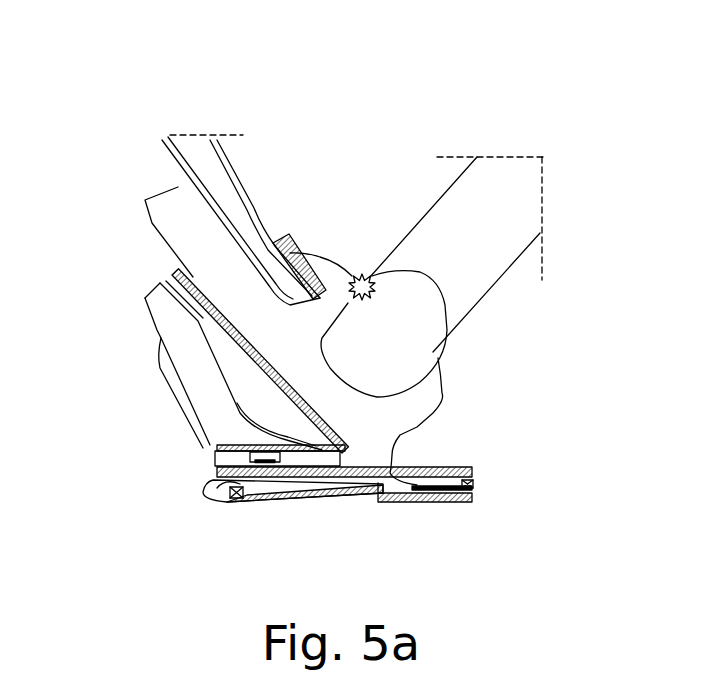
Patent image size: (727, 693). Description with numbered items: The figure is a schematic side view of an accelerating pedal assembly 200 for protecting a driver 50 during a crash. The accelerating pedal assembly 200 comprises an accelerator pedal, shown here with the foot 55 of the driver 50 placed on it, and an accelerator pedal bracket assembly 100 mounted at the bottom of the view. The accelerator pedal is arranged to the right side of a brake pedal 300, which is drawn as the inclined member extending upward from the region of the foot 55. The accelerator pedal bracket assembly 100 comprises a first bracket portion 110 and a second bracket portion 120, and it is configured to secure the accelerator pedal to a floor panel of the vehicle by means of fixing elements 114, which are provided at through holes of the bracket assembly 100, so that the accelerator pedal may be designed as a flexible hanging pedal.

The driver 50 is at (502, 157).
The foot 55 is at (320, 258).
The accelerator pedal bracket assembly 100 is at (203, 492).
The first bracket portion 110 is at (263, 502).
The fixing element 114 is at (237, 502).
The second bracket portion 120 is at (428, 483).
The accelerating pedal assembly 200 is at (162, 370).
The brake pedal 300 is at (198, 137).